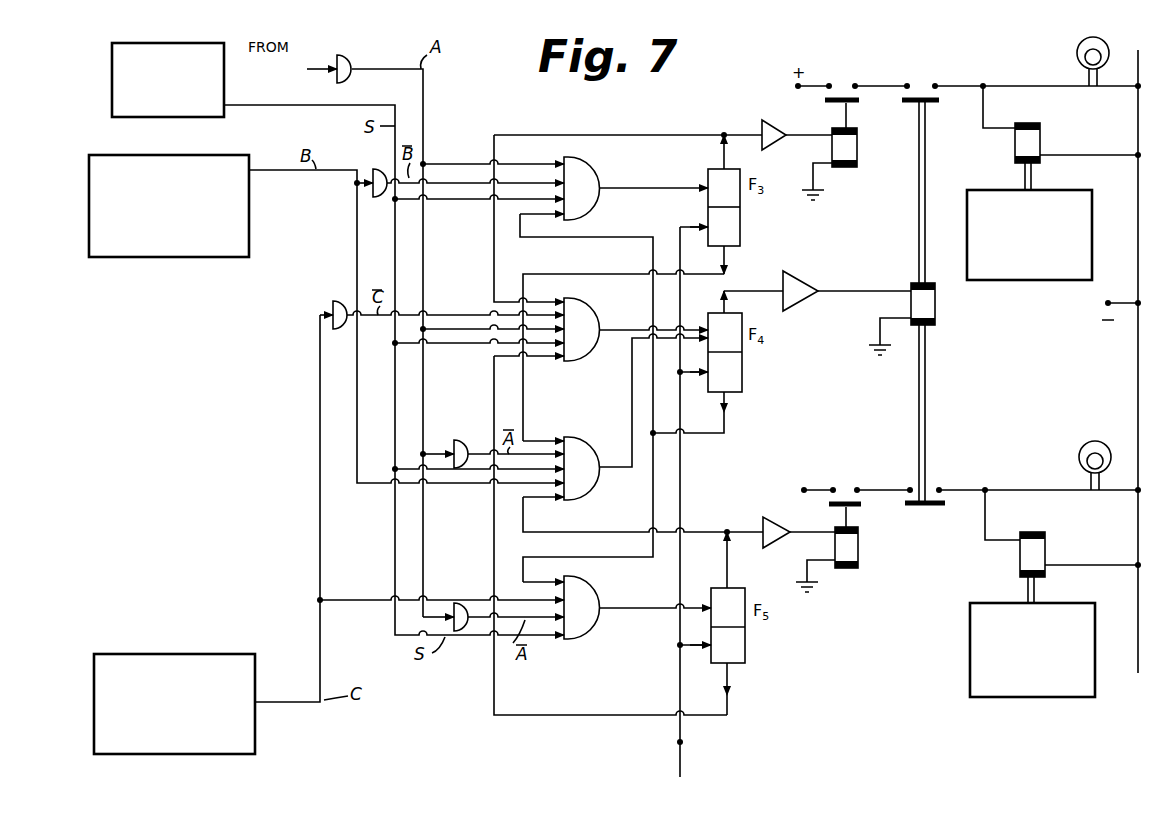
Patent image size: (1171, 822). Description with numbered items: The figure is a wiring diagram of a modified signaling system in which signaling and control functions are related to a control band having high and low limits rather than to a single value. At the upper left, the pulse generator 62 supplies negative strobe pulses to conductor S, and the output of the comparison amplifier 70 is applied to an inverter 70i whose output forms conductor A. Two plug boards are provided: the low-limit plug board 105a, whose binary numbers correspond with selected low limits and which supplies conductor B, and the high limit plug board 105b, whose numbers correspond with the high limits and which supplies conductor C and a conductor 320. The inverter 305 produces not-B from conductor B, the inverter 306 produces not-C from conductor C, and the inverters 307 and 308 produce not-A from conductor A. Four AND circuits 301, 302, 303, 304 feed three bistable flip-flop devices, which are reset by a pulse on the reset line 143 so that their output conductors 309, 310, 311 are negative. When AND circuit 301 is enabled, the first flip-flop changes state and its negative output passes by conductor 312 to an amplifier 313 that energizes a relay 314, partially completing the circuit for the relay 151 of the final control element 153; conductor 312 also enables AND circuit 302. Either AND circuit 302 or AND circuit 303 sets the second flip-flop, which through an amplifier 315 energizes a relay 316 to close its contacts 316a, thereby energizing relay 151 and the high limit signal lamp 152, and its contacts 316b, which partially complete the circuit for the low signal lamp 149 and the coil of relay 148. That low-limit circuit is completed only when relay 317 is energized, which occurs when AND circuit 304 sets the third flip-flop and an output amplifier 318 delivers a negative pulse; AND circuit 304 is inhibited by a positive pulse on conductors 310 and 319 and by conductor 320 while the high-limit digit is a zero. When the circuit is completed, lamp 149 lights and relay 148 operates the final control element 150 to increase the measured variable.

The pulse generator 62 is at (158, 50).
The comparison amplifier 70 is at (312, 68).
The inverter 70i is at (347, 59).
The low-limit plug board 105a is at (132, 252).
The high limit plug board 105b is at (190, 640).
The reset line 143 is at (678, 766).
The relay 148 is at (1040, 548).
The low limit signal lamp 149 is at (1083, 453).
The final control element 150 is at (1064, 690).
The relay 151 is at (1040, 138).
The high limit signal lamp 152 is at (1078, 47).
The final control element 153 is at (1022, 275).
The AND circuit 301 is at (591, 166).
The AND circuit 302 is at (593, 313).
The AND circuit 303 is at (591, 431).
The AND circuit 304 is at (587, 588).
The inverter 305 is at (383, 169).
The inverter 306 is at (337, 302).
The inverter 307 is at (480, 424).
The inverter 308 is at (480, 583).
The output conductor 309 is at (728, 253).
The output conductor 310 is at (730, 398).
The output conductor 311 is at (731, 696).
The conductor 312 is at (637, 134).
The amplifier 313 is at (782, 112).
The relay 314 is at (858, 154).
The amplifier 315 is at (801, 274).
The relay 316 is at (911, 301).
The relay contacts 316a is at (918, 83).
The relay contacts 316b is at (938, 478).
The relay 317 is at (860, 543).
The output amplifier 318 is at (767, 514).
The conductor 319 is at (650, 498).
The conductor 320 is at (388, 600).